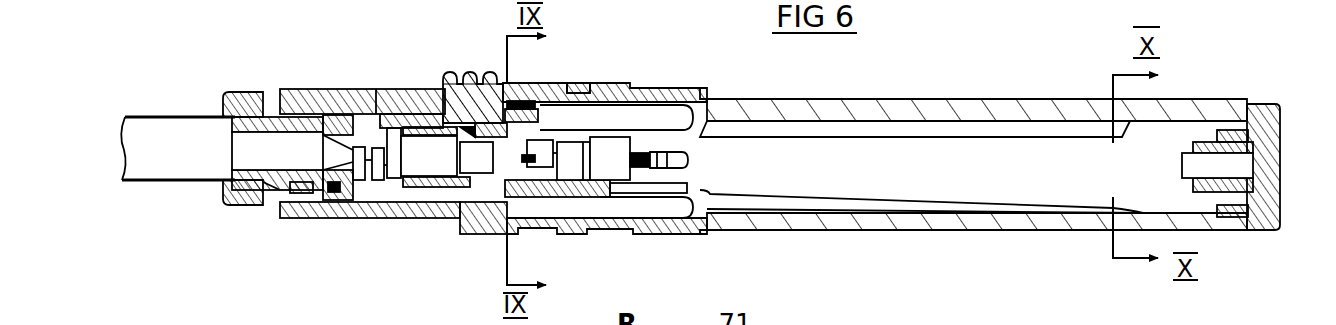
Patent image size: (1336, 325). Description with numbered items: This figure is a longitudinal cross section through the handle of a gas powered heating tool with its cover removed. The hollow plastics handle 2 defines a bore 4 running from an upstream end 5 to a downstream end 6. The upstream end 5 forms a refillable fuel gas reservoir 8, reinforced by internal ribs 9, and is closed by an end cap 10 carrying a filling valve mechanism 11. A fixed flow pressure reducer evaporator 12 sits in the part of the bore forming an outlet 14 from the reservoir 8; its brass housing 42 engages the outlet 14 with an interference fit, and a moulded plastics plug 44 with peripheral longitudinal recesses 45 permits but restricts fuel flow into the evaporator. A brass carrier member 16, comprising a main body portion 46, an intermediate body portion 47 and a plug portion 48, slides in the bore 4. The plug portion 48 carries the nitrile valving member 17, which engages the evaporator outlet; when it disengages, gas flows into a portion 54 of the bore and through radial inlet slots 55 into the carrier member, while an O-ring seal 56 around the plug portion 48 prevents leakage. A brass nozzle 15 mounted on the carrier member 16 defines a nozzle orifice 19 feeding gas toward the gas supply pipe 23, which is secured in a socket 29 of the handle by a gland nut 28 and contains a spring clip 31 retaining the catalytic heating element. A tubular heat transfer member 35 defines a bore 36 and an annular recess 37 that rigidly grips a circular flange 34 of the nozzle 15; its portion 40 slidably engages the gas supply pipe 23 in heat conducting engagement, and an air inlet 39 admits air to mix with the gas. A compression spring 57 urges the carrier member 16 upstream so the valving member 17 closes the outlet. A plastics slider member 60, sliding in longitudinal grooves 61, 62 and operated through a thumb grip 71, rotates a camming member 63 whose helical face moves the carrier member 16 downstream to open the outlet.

The handle 2 is at (995, 110).
The bore 4 is at (930, 143).
The upstream end 5 is at (1217, 112).
The downstream end 6 is at (290, 88).
The reservoir 8 is at (1017, 195).
The internal ribs 9 is at (1078, 132).
The end cap 10 is at (1277, 108).
The filling valve mechanism 11 is at (1245, 166).
The fixed flow pressure reducer evaporator 12 is at (612, 143).
The outlet 14 is at (617, 180).
The nozzle 15 is at (368, 200).
The carrier member 16 is at (395, 178).
The valving member 17 is at (530, 167).
The nozzle orifice 19 is at (360, 180).
The gas supply pipe 23 is at (150, 170).
The gland nut 28 is at (260, 200).
The socket 29 is at (323, 167).
The spring clip 31 is at (330, 182).
The circular flange 34 is at (403, 187).
The heat transfer member 35 is at (243, 193).
The bore 36 is at (245, 147).
The annular recess 37 is at (385, 173).
The air inlet 39 is at (336, 106).
The portion 40 is at (236, 112).
The housing 42 is at (620, 173).
The plug 44 is at (684, 160).
The longitudinal recesses 45 is at (637, 147).
The main body portion 46 is at (437, 176).
The intermediate body portion 47 is at (482, 173).
The plug portion 48 is at (518, 160).
The portion of the bore 54 is at (567, 93).
The radial inlet slots 55 is at (523, 157).
The O-ring seal 56 is at (500, 157).
The compression spring 57 is at (356, 200).
The slider member 60 is at (445, 86).
The longitudinal groove 61 is at (330, 102).
The longitudinal groove 62 is at (570, 100).
The camming member 63 is at (400, 128).
The thumb grip 71 is at (467, 77).